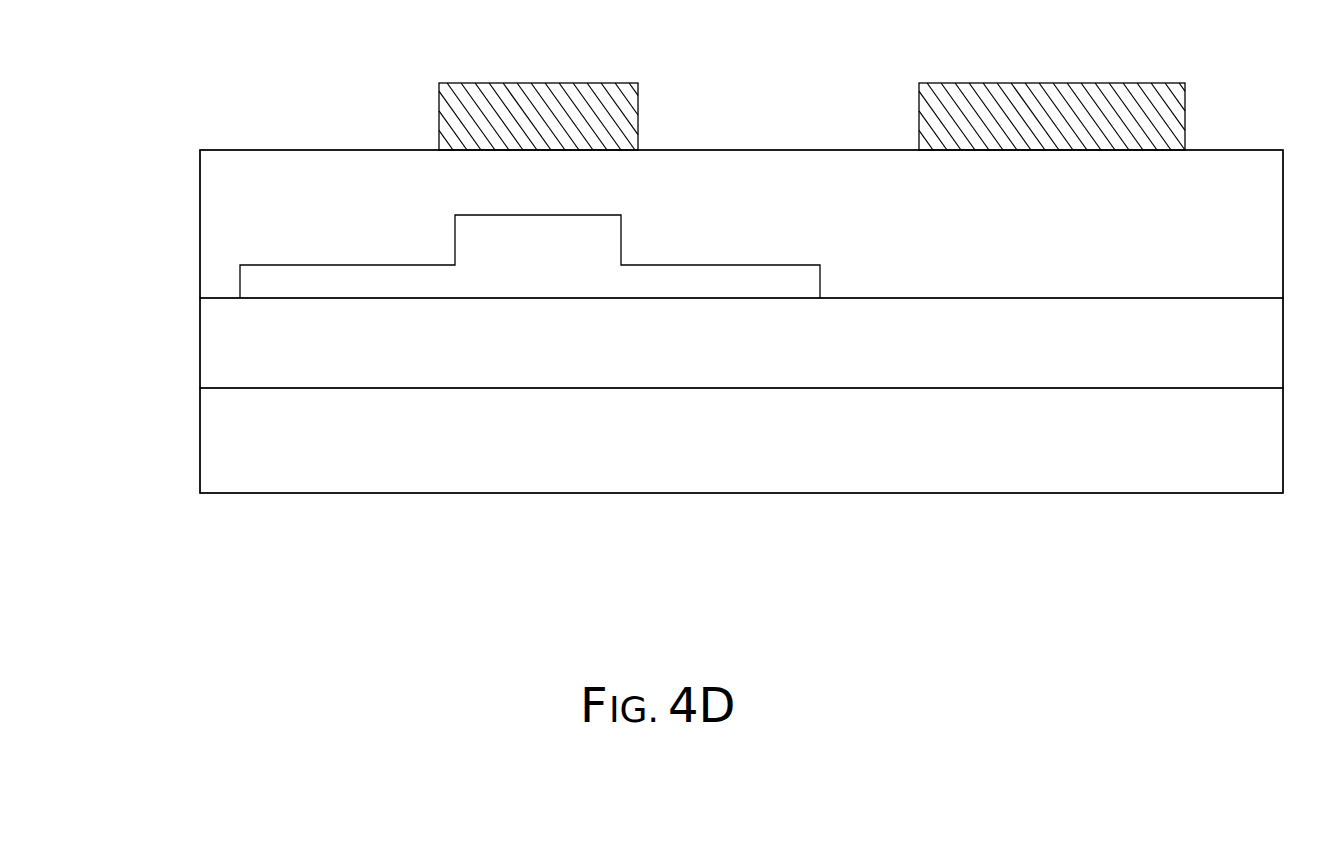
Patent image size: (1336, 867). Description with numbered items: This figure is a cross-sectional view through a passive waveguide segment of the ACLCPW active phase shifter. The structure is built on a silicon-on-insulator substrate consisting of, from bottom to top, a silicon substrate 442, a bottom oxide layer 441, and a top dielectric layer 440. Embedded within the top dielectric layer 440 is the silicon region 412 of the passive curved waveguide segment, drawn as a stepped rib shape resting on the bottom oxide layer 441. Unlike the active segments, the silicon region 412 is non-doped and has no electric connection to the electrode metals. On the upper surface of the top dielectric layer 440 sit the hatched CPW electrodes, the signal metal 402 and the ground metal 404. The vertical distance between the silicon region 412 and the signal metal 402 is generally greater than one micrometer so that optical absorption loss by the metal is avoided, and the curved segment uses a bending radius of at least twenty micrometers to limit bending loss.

The signal metal 402 is at (528, 125).
The ground metal 404 is at (1052, 117).
The silicon region 412 is at (538, 250).
The top dielectric layer 440 is at (285, 205).
The bottom oxide layer 441 is at (285, 322).
The silicon substrate 442 is at (285, 437).